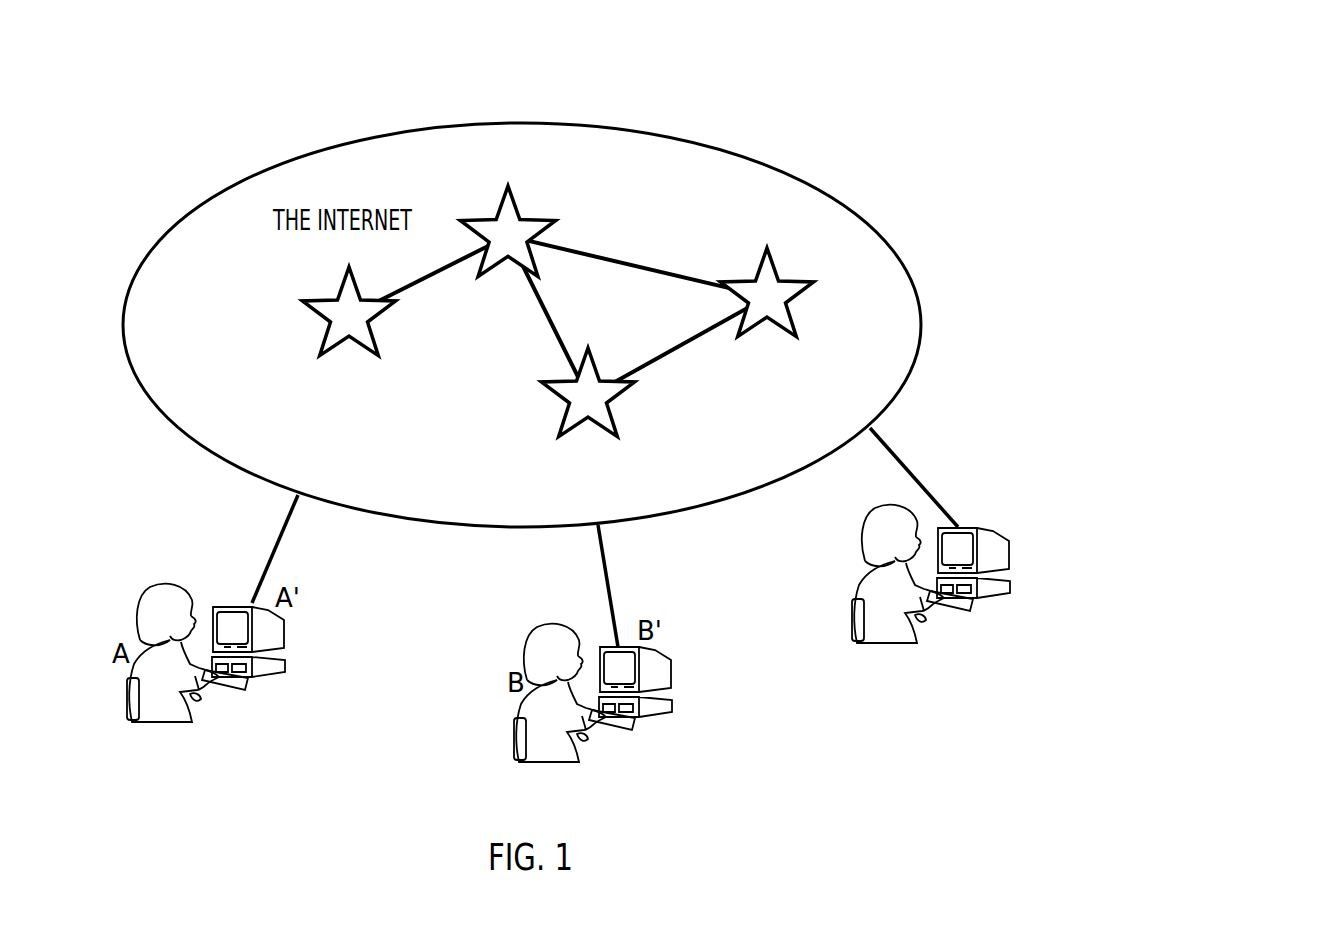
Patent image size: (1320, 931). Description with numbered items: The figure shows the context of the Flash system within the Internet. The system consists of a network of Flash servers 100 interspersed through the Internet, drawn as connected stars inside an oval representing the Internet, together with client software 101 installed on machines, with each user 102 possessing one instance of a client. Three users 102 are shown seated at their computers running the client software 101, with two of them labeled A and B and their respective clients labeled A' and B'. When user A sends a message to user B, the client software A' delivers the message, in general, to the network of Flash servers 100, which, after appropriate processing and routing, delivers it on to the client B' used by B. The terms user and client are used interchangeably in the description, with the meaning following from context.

The network of Flash servers 100 is at (613, 303).
The client software 101 is at (660, 655).
The user 102 is at (573, 757).